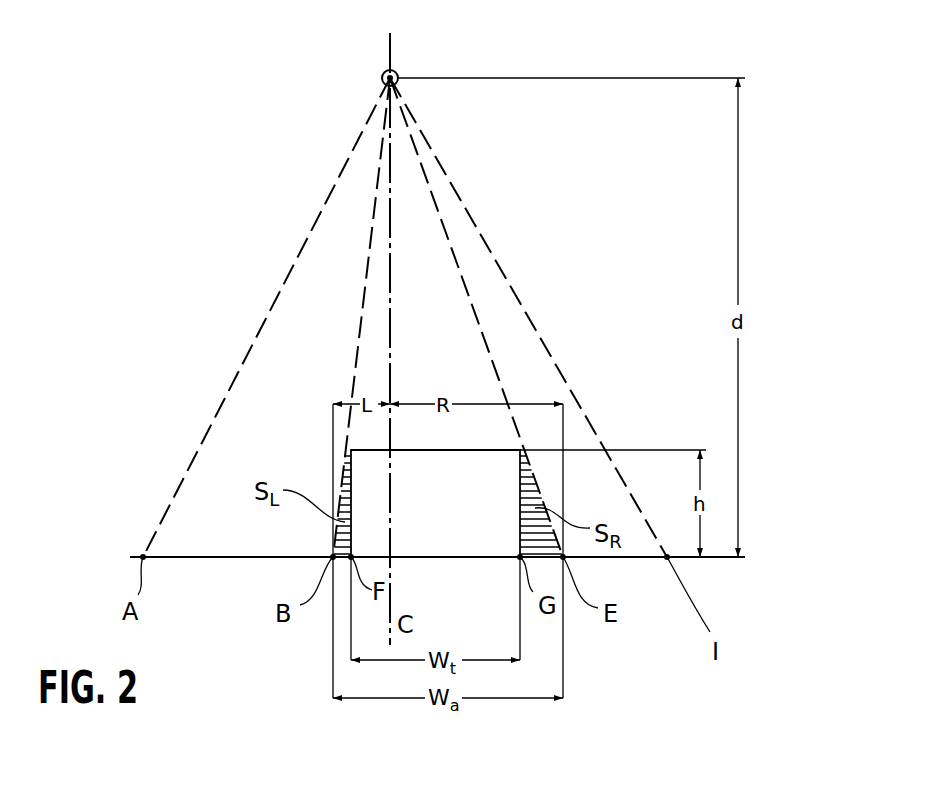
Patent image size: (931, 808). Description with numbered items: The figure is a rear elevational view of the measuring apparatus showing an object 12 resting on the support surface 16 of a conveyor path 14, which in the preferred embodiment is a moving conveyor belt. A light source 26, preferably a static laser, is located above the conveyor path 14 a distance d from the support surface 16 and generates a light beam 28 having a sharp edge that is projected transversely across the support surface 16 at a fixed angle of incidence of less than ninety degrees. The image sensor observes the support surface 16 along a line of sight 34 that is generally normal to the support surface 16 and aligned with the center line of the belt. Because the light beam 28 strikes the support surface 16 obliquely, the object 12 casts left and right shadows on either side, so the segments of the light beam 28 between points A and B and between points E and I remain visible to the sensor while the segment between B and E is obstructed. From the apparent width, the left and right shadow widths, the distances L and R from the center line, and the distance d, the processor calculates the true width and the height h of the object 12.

The object 12 is at (435, 503).
The conveyor path 14 is at (180, 557).
The support surface 16 is at (200, 557).
The light source 26 is at (404, 72).
The light beam 28 is at (330, 190).
The line of sight 34 is at (392, 322).